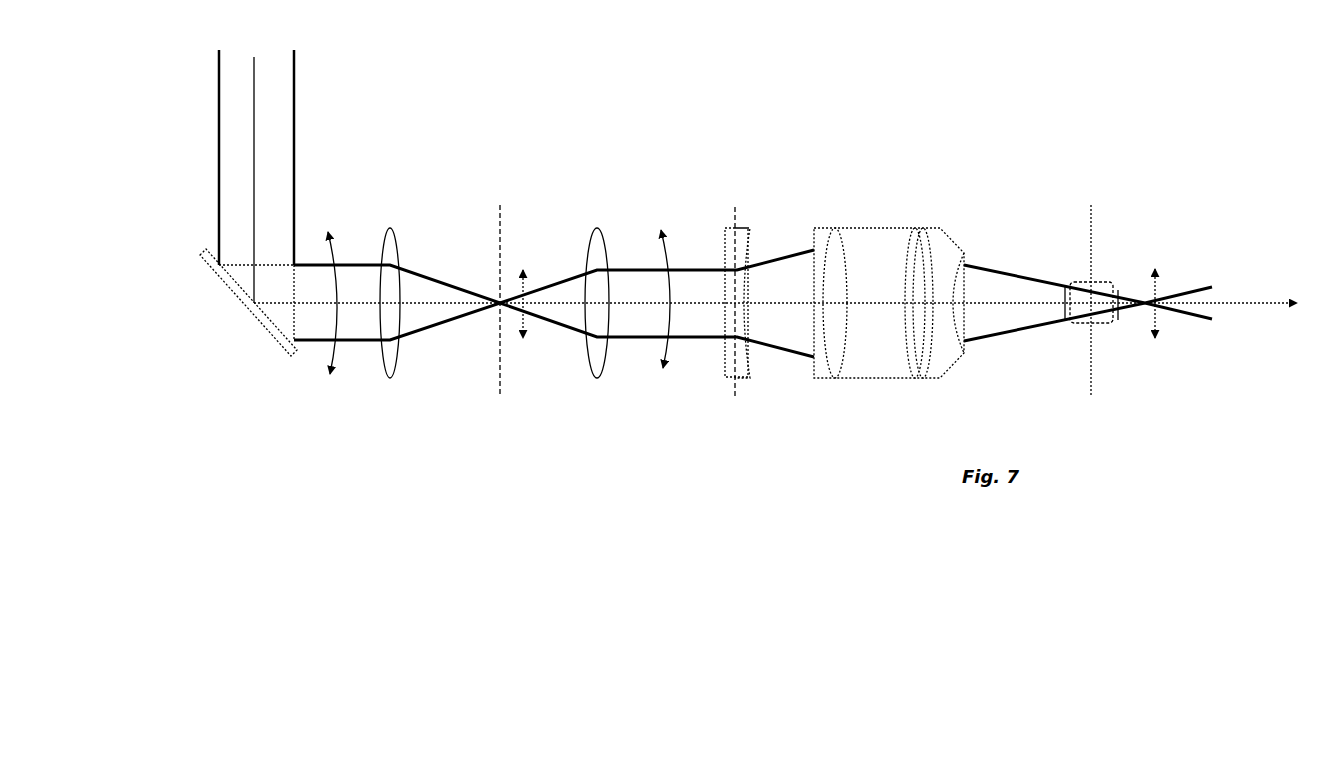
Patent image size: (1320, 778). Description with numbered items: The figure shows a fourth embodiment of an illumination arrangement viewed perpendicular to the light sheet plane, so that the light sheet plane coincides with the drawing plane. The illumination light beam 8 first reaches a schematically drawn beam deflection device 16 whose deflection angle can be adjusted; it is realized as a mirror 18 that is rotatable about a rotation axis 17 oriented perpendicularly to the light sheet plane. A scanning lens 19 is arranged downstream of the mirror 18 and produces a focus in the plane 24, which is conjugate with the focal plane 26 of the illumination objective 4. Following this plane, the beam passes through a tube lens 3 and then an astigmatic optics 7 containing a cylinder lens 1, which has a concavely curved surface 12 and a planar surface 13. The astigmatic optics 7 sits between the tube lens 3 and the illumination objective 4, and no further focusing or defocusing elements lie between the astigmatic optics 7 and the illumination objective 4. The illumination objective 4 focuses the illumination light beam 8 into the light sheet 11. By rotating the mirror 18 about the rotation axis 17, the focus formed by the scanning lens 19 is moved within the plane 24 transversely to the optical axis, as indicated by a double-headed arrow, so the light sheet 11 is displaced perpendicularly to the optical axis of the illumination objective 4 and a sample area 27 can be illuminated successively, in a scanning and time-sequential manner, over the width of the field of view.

The illumination light beam 8 is at (240, 152).
The mirror 18 is at (203, 262).
The rotation axis 17 is at (266, 339).
The beam deflection device 16 is at (218, 362).
The scanning lens 19 is at (392, 255).
The plane conjugate with the focal plane 24 is at (499, 223).
The tube lens 3 is at (597, 233).
The cylinder lens 1 is at (739, 230).
The astigmatic optics 7 is at (735, 115).
The illumination objective 4 is at (883, 175).
The planar surface 13 is at (723, 358).
The concavely curved surface 12 is at (747, 370).
The focal plane 26 is at (1092, 218).
The light sheet 11 is at (1069, 327).
The sample area 27 is at (1104, 324).